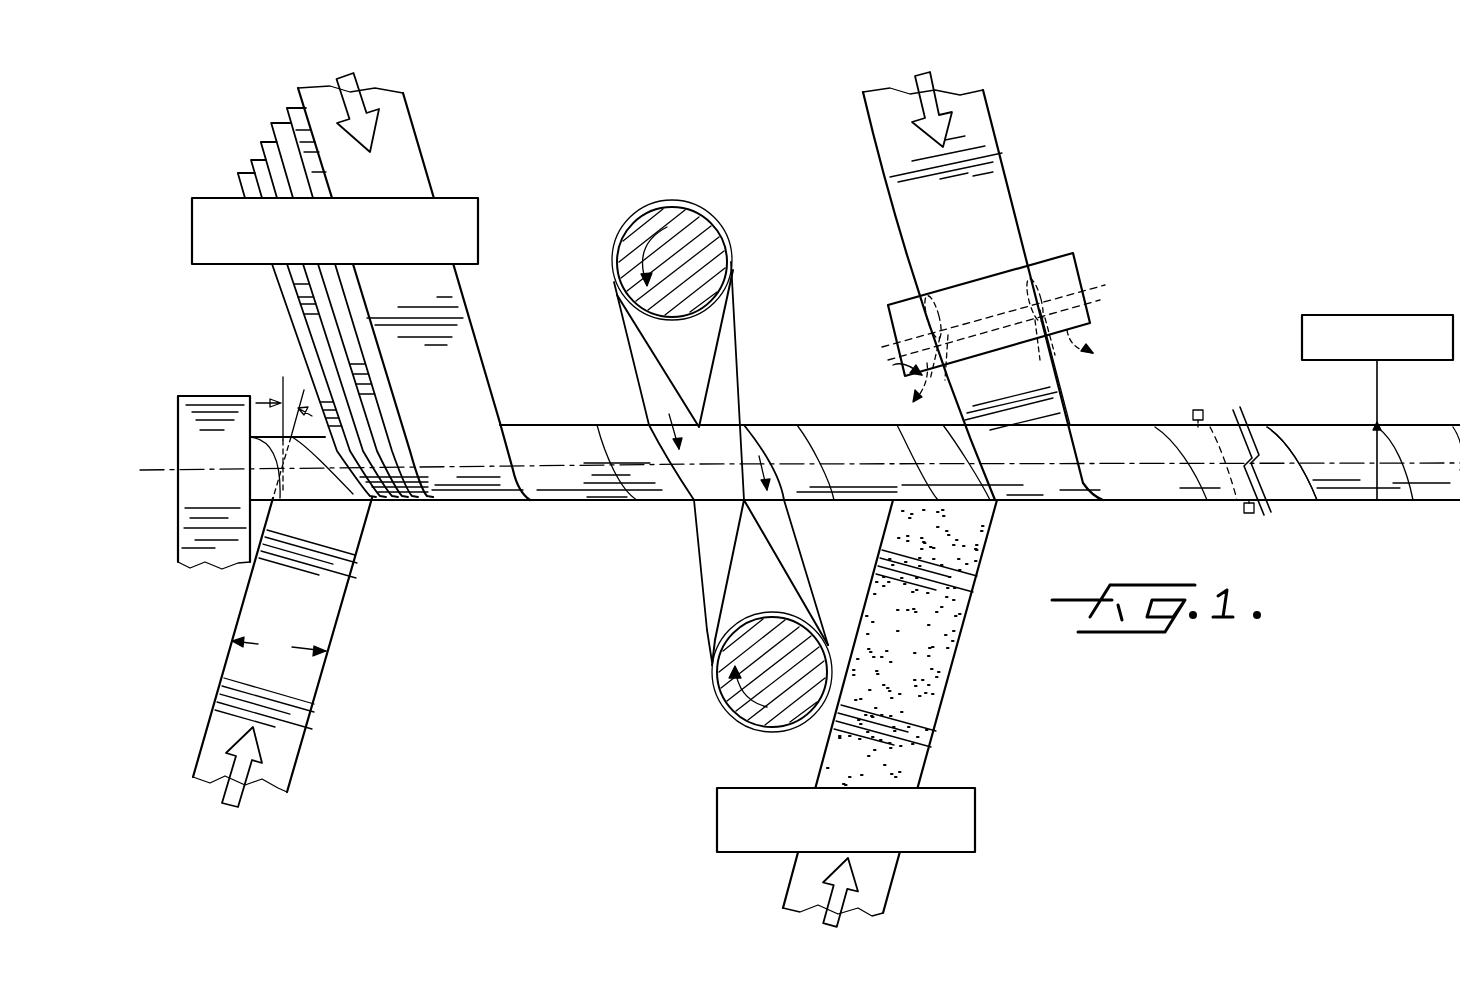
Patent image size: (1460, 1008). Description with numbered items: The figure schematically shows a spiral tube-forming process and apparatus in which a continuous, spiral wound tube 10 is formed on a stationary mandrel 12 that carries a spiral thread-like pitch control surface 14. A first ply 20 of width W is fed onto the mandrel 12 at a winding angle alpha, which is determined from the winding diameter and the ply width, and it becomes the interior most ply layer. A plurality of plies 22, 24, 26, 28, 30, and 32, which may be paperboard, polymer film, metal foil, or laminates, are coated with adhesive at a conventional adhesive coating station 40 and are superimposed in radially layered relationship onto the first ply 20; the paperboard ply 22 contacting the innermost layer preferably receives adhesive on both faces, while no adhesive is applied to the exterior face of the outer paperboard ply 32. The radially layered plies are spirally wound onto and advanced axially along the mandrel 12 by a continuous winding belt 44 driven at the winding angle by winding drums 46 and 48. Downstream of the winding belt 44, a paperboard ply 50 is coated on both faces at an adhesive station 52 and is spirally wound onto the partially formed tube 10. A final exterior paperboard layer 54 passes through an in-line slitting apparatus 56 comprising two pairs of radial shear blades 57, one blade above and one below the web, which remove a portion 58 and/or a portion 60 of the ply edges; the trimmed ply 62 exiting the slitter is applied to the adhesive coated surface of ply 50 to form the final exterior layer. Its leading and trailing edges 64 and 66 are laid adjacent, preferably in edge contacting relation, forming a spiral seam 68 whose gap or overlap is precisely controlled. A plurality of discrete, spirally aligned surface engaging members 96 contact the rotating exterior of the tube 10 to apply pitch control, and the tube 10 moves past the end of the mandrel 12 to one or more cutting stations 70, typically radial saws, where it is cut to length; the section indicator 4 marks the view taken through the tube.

The spiral wound tube 10 is at (1320, 428).
The mandrel 12 is at (258, 452).
The pitch control surface 14 is at (275, 478).
The first ply 20 is at (313, 631).
The paperboard ply 22 is at (238, 177).
The ply 24 is at (252, 164).
The ply 26 is at (263, 144).
The ply 28 is at (274, 125).
The ply 30 is at (291, 110).
The outer paperboard ply 32 is at (390, 92).
The adhesive coating station 40 is at (462, 205).
The winding belt 44 is at (723, 393).
The winding drum 46 is at (702, 228).
The winding drum 48 is at (733, 697).
The paperboard ply 50 is at (875, 885).
The adhesive station 52 is at (977, 803).
The exterior paperboard layer 54 is at (997, 193).
The in-line slitting apparatus 56 is at (1060, 277).
The radial shear blades 57 is at (1025, 285).
The removed edge portion 58 is at (1093, 323).
The removed edge portion 60 is at (893, 367).
The trimmed ply 62 is at (1047, 386).
The leading edge 64 is at (1077, 497).
The trailing edge 66 is at (998, 495).
The spiral seam 68 is at (1293, 447).
The cutting station 70 is at (1447, 315).
The surface engaging members 96 is at (1232, 535).
The section line indicator 4 is at (1165, 443).